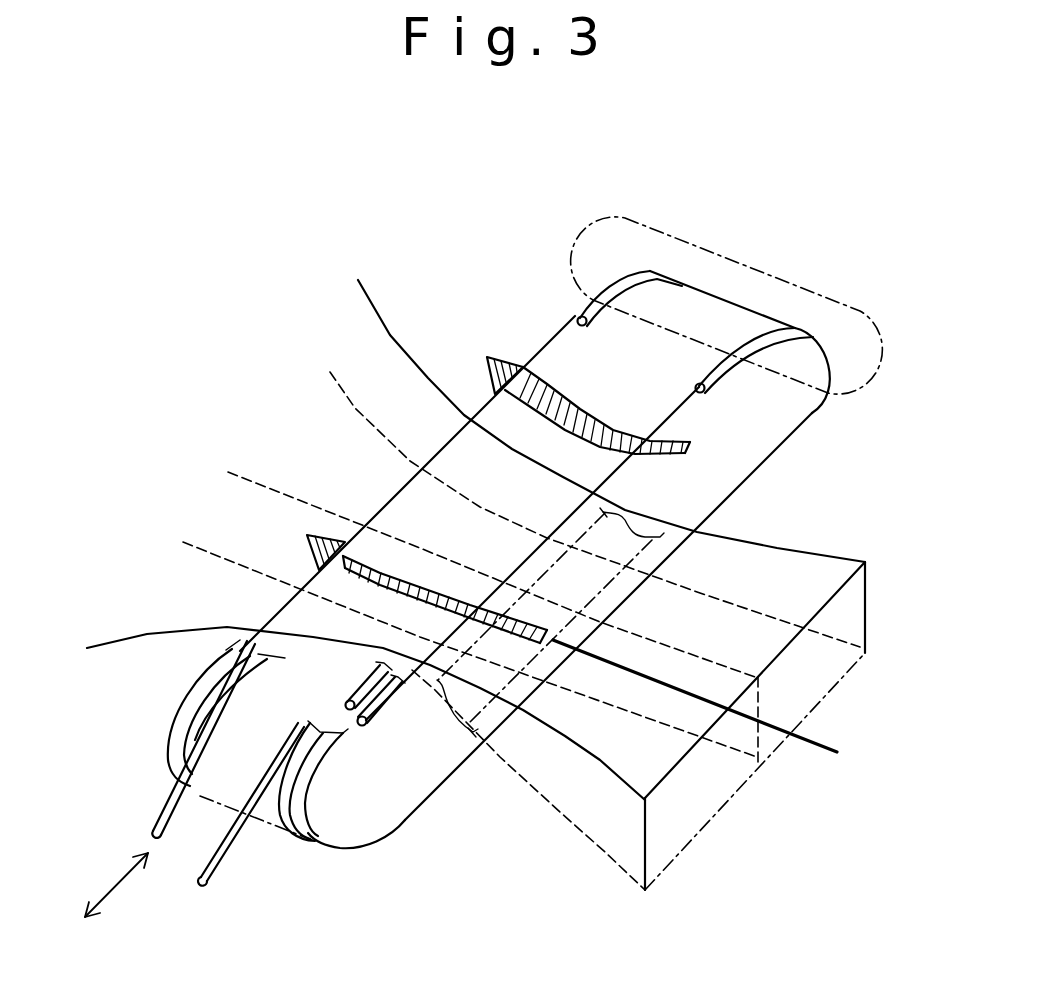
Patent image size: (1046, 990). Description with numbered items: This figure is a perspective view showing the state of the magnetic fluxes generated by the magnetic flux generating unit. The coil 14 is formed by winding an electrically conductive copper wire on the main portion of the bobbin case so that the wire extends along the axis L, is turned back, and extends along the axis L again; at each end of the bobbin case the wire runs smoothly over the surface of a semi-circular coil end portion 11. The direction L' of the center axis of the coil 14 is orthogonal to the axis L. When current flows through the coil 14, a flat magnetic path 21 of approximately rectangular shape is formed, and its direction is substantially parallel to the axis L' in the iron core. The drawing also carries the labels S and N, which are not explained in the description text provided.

The coil end portion 11 is at (387, 807).
The coil 14 is at (213, 713).
The magnetic path 21 is at (685, 847).
The hatched bar / sensing portion S is at (416, 585).
The normal line N is at (706, 703).
The axis L is at (120, 896).
The direction of the center axis of the coil L' is at (798, 787).